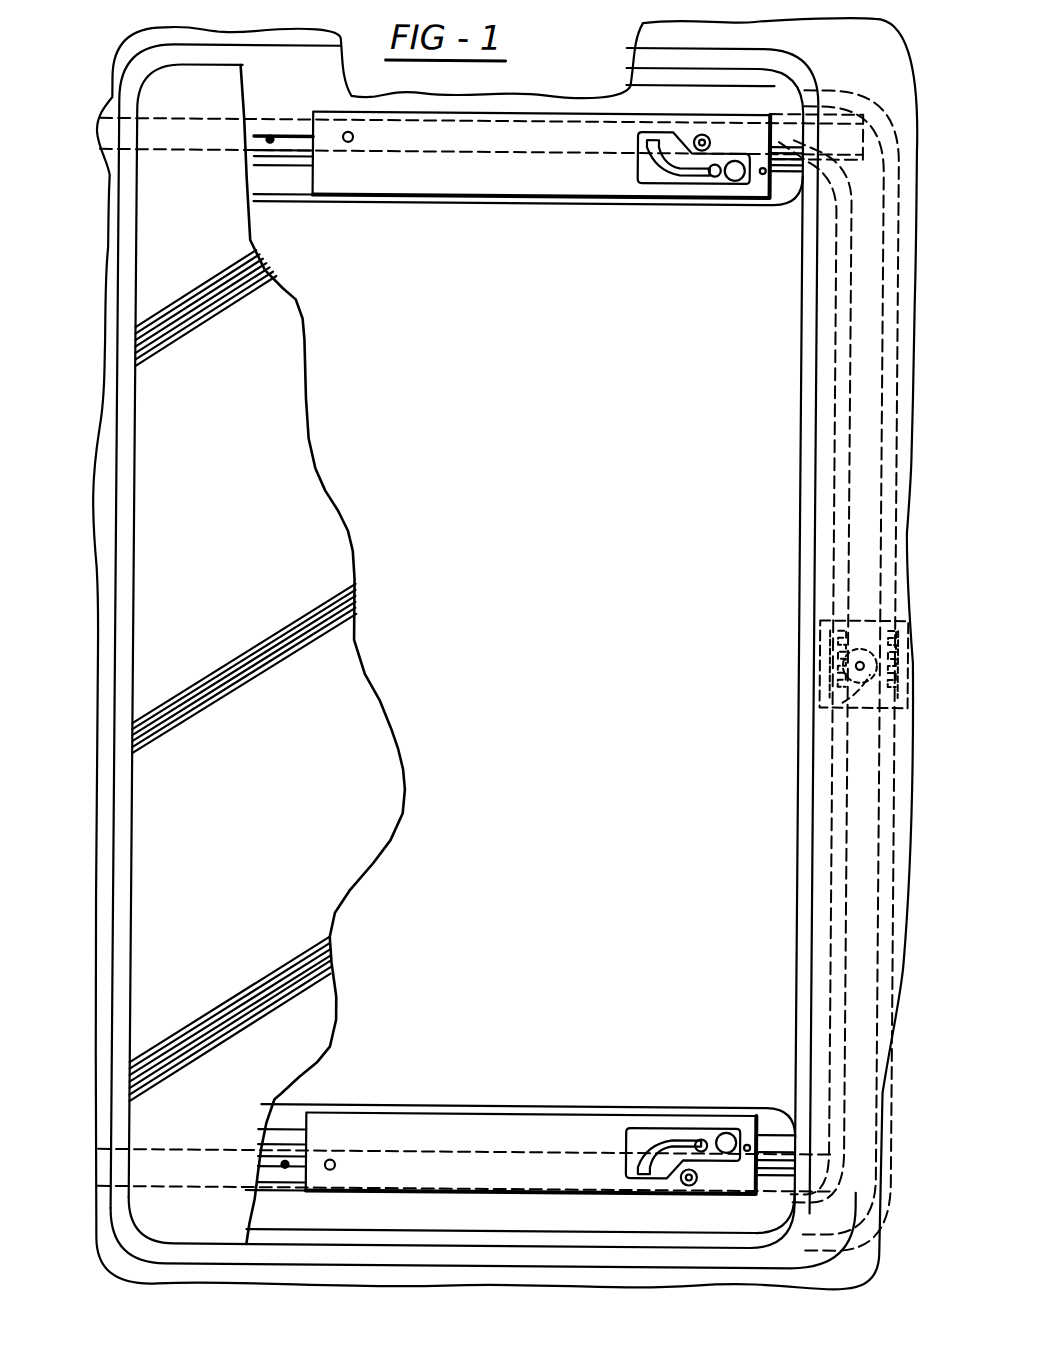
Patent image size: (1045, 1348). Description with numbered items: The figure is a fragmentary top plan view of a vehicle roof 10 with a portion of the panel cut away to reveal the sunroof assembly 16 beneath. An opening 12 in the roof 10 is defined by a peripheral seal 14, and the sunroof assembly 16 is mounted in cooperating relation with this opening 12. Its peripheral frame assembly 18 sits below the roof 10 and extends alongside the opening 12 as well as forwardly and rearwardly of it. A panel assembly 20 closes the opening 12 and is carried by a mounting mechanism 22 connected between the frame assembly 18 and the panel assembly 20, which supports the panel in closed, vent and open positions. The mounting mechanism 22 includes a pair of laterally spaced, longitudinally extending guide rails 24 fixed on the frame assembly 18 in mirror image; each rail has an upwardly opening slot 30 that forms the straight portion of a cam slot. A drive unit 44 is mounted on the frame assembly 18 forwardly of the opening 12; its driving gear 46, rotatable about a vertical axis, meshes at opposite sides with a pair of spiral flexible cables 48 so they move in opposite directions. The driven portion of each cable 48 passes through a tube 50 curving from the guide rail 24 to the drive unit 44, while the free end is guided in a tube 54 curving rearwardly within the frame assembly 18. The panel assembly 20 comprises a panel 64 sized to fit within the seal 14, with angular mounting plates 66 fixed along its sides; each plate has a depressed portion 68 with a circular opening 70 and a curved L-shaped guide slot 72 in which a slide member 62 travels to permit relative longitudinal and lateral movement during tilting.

The vehicle roof 10 is at (144, 62).
The opening 12 is at (160, 1246).
The peripheral seal 14 is at (184, 1255).
The sunroof assembly 16 is at (199, 57).
The frame assembly 18 is at (287, 194).
The panel assembly 20 is at (548, 1109).
The mounting mechanism 22 is at (776, 106).
The guide rails 24 is at (307, 131).
The slot 30 is at (269, 142).
The drive unit 44 is at (820, 660).
The driving gear 46 is at (840, 712).
The spiral flexible cables 48 is at (835, 625).
The tube 50 is at (834, 413).
The tube 54 is at (698, 78).
The slide member 62 is at (709, 176).
The panel 64 is at (395, 746).
The mounting plates 66 is at (506, 181).
The depressed portion 68 is at (634, 173).
The circular opening 70 is at (731, 179).
The guide slot 72 is at (674, 171).